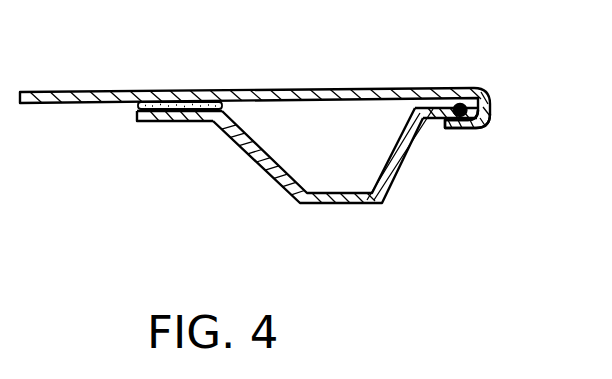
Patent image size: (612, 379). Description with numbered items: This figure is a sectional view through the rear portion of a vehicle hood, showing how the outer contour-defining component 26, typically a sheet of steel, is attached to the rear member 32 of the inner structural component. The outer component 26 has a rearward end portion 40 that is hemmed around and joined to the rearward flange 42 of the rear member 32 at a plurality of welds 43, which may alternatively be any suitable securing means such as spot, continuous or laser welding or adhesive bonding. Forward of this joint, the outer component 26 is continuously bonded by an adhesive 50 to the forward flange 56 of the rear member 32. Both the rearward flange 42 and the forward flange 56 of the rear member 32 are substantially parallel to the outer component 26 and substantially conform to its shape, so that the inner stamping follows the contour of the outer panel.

The outer contour-defining component 26 is at (237, 89).
The adhesive 50 is at (138, 107).
The forward flange 56 is at (158, 123).
The rear member 32 is at (320, 205).
The rearward flange 42 is at (442, 119).
The rearward end portion 40 is at (463, 92).
The welds 43 is at (468, 126).